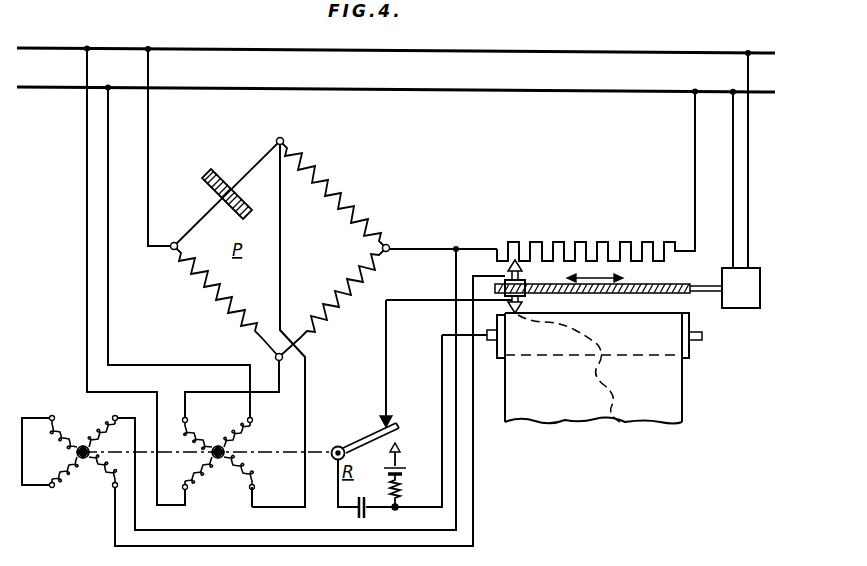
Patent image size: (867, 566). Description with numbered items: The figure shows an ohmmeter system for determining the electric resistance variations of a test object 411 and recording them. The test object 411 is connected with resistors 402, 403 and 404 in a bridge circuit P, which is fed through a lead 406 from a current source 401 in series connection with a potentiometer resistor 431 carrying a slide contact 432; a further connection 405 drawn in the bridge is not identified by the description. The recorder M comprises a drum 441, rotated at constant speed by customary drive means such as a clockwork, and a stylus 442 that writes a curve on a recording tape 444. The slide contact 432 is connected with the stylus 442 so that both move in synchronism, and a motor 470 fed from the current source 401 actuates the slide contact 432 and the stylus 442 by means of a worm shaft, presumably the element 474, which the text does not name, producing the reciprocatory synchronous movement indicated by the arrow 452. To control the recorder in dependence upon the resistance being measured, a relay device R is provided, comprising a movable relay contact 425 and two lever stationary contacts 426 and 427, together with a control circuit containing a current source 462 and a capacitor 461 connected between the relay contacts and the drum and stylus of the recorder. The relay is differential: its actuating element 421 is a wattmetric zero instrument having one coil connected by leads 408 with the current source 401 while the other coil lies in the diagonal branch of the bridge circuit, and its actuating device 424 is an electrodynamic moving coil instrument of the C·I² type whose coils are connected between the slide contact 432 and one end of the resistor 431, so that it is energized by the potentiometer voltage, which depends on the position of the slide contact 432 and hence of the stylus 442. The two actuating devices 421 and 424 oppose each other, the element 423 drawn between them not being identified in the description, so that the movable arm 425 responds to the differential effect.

The current source 401 is at (633, 87).
The resistor 402 is at (336, 180).
The resistor 403 is at (338, 312).
The resistor 404 is at (214, 305).
The bridge output conductor 405 is at (281, 242).
The lead 406 is at (149, 108).
The leads 408 is at (88, 156).
The test object 411 is at (208, 175).
The actuating element 421 is at (219, 463).
The mechanical coupling 423 is at (278, 452).
The actuating device 424 is at (84, 460).
The movable relay contact 425 is at (352, 440).
The lever stationary contact 426 is at (385, 410).
The lever stationary contact 427 is at (398, 446).
The potentiometer resistor 431 is at (574, 242).
The slide contact 432 is at (508, 266).
The drum 441 is at (690, 353).
The stylus 442 is at (520, 310).
The recording tape 444 is at (688, 414).
The arrow 452 is at (607, 275).
The capacitor 461 is at (358, 512).
The current source 462 is at (400, 470).
The motor 470 is at (740, 298).
The lead screw 474 is at (645, 285).